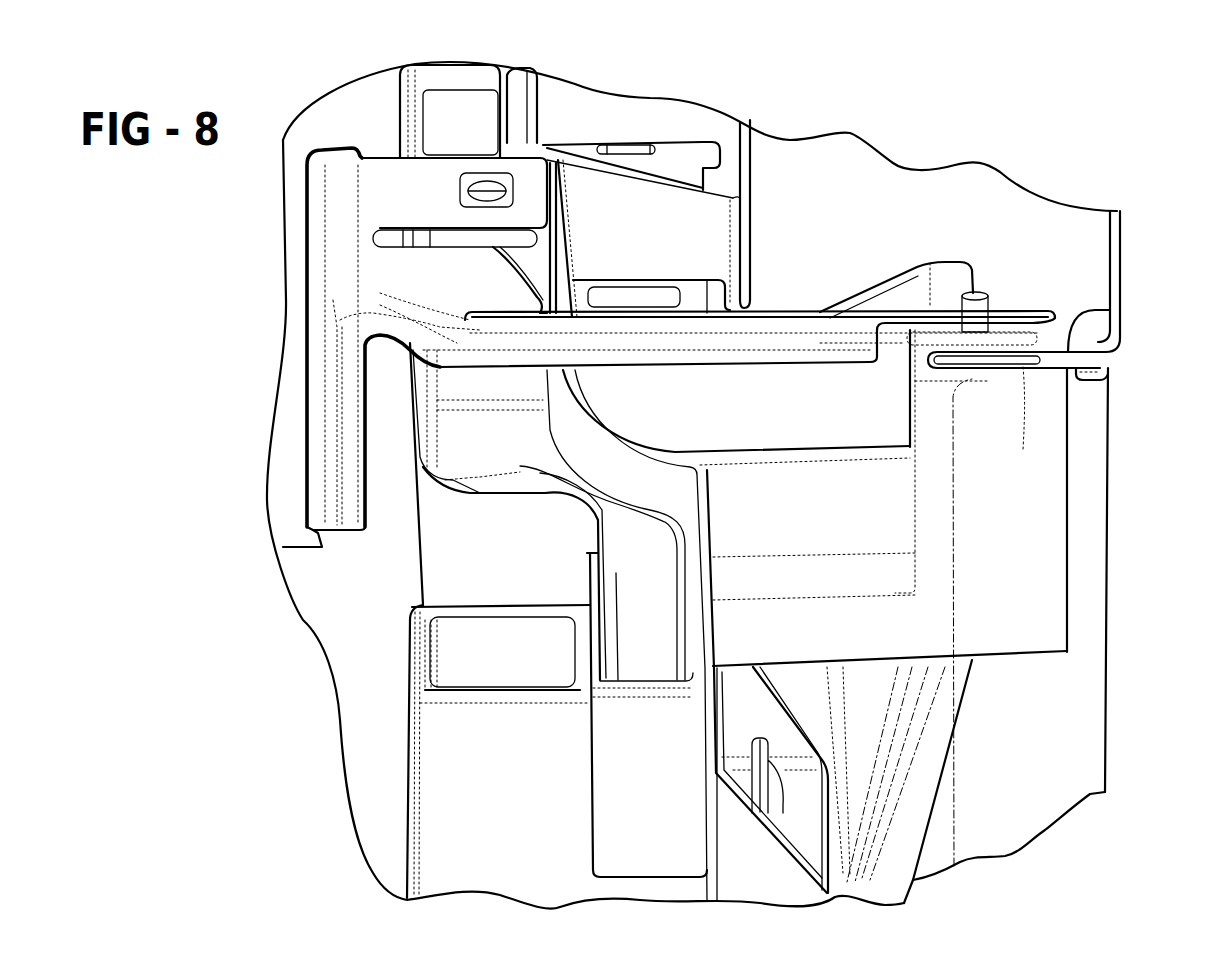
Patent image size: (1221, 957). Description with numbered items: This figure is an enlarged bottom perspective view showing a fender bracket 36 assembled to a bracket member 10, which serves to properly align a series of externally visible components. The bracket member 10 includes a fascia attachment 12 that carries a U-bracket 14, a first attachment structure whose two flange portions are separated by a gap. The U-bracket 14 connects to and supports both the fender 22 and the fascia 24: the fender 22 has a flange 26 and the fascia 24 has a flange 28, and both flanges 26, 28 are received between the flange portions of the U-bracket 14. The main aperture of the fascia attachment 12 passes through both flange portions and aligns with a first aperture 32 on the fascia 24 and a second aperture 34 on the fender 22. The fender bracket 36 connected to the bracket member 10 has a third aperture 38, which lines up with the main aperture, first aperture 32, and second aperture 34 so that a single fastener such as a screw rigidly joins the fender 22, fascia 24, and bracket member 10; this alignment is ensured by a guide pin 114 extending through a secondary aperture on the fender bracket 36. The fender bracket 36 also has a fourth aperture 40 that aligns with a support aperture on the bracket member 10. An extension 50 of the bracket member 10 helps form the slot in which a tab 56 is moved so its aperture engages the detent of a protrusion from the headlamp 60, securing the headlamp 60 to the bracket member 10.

The bracket member 10 is at (453, 110).
The fascia attachment 12 is at (765, 505).
The U-bracket 14 is at (918, 342).
The fender 22 is at (1122, 265).
The fascia 24 is at (1069, 690).
The flange 26 is at (1078, 375).
The flange 28 is at (1113, 310).
The first aperture 32 is at (1030, 365).
The second aperture 34 is at (1037, 347).
The fender bracket 36 is at (395, 270).
The third aperture 38 is at (965, 290).
The fourth aperture 40 is at (460, 193).
The extension 50 is at (683, 232).
The tab 56 is at (681, 152).
The headlamp 60 is at (355, 577).
The guide pin 114 is at (990, 290).